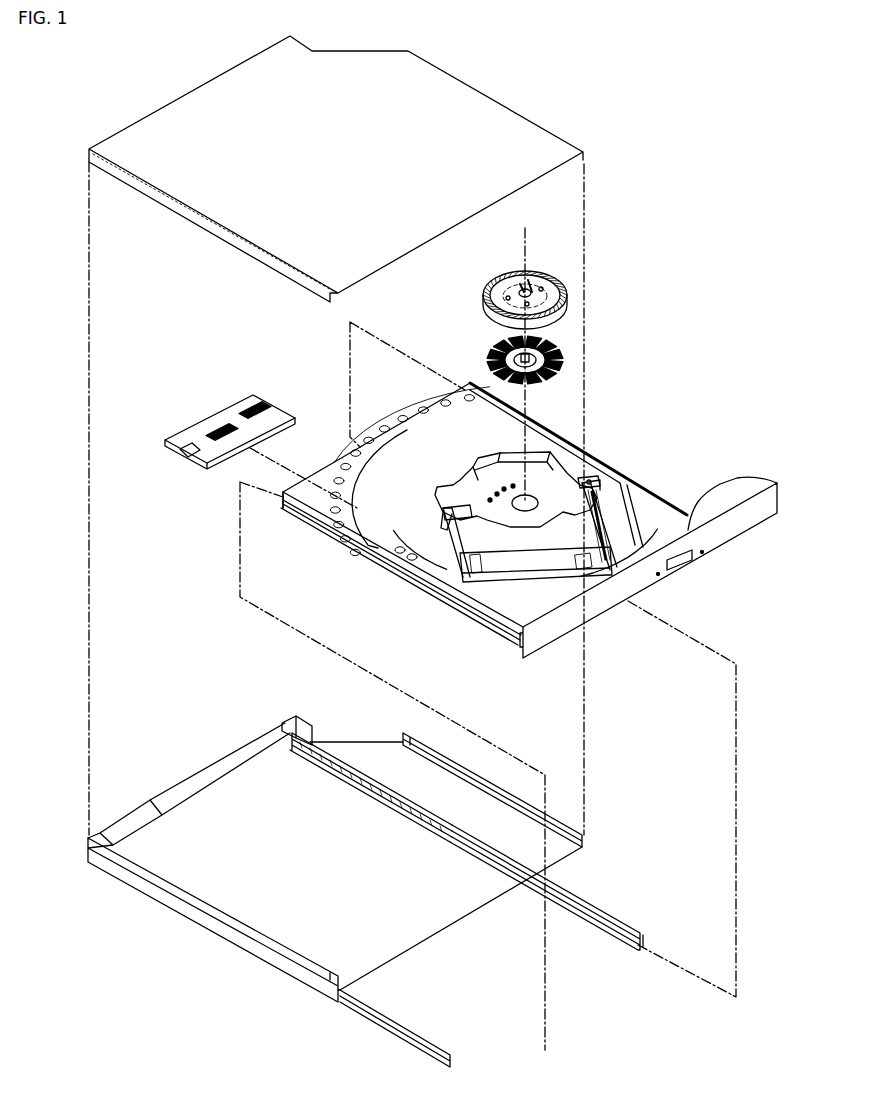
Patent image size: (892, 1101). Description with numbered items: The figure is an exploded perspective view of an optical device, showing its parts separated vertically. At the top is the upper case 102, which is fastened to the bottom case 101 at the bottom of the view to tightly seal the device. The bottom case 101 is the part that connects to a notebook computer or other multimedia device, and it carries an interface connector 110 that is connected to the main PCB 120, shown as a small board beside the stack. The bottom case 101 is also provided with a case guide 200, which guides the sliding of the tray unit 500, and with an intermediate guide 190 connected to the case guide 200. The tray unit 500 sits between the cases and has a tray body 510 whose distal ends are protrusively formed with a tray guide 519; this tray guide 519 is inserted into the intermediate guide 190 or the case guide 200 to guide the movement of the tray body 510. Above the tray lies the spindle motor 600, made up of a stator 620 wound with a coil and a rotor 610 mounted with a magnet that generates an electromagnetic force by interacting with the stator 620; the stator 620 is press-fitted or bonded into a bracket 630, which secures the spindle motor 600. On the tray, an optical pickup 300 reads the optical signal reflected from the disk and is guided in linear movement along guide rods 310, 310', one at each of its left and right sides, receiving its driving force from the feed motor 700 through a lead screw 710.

The upper case 102 is at (467, 123).
The interface connector 110 is at (140, 818).
The bottom case 101 is at (556, 850).
The main PCB 120 is at (192, 448).
The case guide 200 is at (314, 744).
The intermediate guide 190 is at (625, 932).
The tray unit 500 is at (692, 486).
The tray body 510 is at (452, 452).
The tray guide 519 is at (325, 531).
The guide rod 310 is at (648, 567).
The guide rod 310' is at (390, 551).
The optical pickup 300 is at (544, 560).
The bracket 630 is at (558, 488).
The feed motor 700 is at (597, 490).
The lead screw 710 is at (603, 507).
The spindle motor 600 is at (650, 290).
The rotor 610 is at (540, 293).
The stator 620 is at (560, 363).